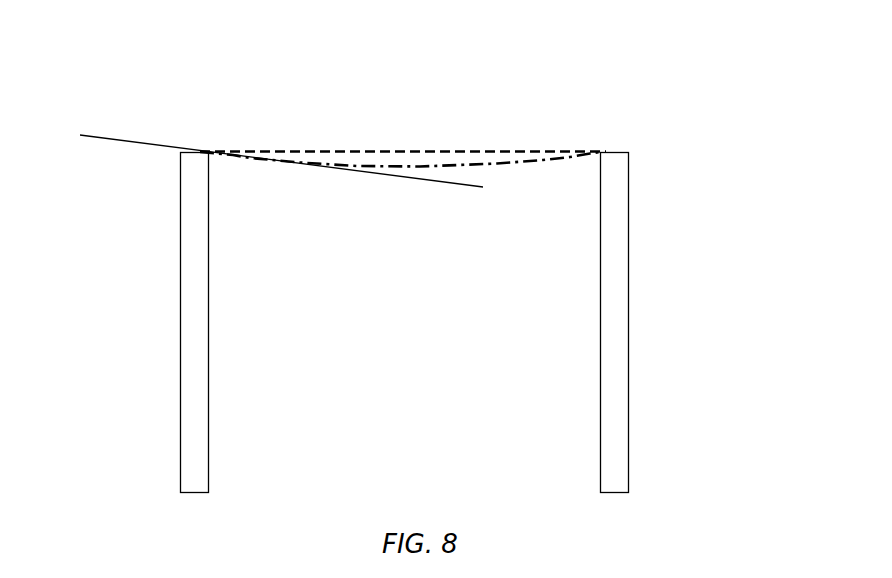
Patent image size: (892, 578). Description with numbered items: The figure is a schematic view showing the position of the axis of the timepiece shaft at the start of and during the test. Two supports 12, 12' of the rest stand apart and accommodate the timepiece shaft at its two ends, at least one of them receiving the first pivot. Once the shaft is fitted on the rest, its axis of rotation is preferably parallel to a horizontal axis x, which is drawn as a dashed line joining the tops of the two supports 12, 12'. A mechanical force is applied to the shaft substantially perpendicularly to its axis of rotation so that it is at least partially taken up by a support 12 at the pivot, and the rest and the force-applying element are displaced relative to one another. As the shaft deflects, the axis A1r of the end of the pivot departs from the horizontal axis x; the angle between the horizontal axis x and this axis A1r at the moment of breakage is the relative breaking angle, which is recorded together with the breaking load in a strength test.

The support 12 is at (126, 323).
The support 12' is at (684, 323).
The horizontal axis x is at (453, 120).
The axis of the end of the pivot A1r is at (290, 168).